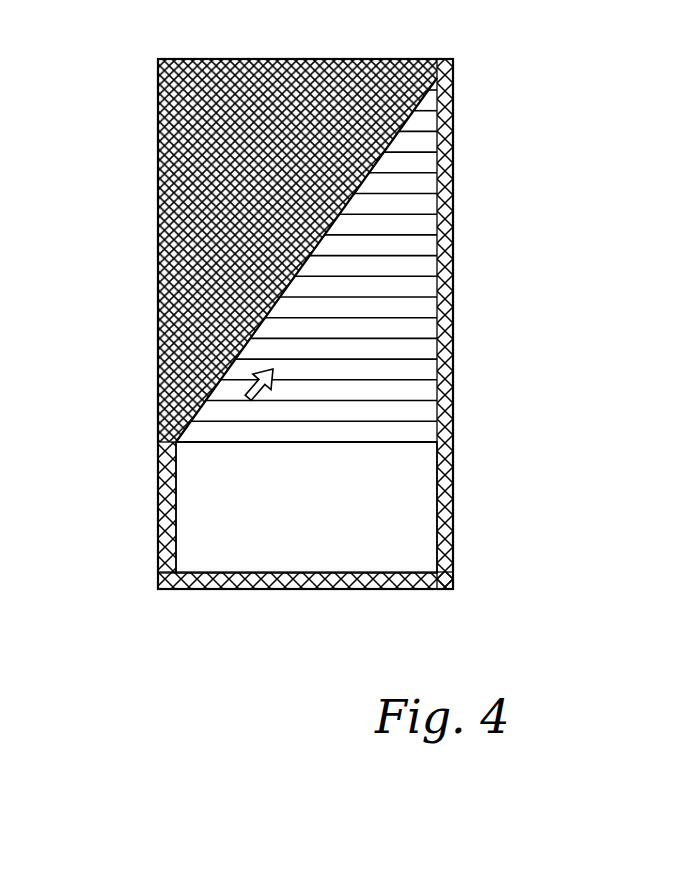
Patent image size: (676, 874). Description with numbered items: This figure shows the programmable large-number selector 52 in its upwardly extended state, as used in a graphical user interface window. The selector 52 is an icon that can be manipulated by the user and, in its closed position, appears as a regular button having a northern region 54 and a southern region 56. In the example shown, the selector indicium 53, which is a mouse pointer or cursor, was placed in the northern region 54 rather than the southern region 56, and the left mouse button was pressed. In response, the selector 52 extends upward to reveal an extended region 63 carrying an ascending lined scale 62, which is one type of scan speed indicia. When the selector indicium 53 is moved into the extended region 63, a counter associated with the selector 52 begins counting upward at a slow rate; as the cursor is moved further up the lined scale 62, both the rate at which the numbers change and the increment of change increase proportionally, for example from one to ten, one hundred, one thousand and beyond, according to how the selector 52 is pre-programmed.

The programmable large-number selector 52 is at (117, 697).
The selector indicium 53 is at (270, 391).
The northern region 54 is at (120, 481).
The southern region 56 is at (120, 557).
The ascending lined scale 62 is at (428, 74).
The extended region 63 is at (118, 256).